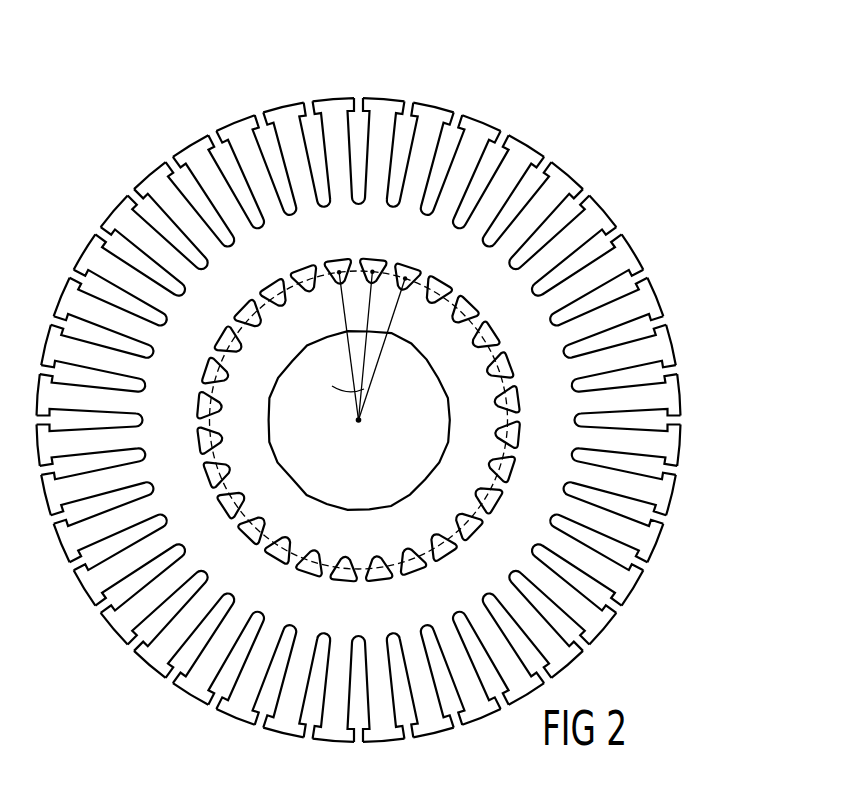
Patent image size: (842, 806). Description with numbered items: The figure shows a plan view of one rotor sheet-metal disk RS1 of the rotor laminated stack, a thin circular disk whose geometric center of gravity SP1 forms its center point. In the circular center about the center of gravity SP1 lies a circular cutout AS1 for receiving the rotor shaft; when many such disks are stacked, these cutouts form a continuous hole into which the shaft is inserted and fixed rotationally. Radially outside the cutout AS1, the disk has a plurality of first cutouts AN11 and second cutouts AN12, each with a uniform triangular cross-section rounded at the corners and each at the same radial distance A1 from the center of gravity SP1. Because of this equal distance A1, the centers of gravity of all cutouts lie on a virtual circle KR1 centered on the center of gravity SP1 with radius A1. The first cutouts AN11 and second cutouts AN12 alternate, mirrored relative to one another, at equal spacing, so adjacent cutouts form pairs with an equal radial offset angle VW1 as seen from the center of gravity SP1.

The rotor sheet-metal disk RS1 is at (587, 112).
The circular cutout AS1 is at (380, 492).
The virtual circle KR1 is at (513, 418).
The first cutouts AN11 is at (339, 272).
The second cutouts AN12 is at (372, 271).
The center of gravity SP1 is at (360, 435).
The radial offset angle VW1 is at (332, 374).
The radial distance A1 is at (349, 349).